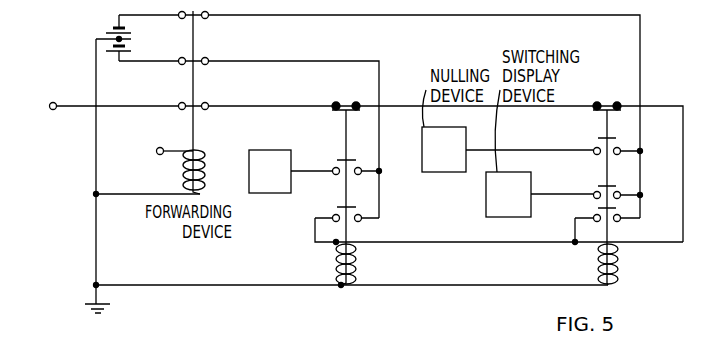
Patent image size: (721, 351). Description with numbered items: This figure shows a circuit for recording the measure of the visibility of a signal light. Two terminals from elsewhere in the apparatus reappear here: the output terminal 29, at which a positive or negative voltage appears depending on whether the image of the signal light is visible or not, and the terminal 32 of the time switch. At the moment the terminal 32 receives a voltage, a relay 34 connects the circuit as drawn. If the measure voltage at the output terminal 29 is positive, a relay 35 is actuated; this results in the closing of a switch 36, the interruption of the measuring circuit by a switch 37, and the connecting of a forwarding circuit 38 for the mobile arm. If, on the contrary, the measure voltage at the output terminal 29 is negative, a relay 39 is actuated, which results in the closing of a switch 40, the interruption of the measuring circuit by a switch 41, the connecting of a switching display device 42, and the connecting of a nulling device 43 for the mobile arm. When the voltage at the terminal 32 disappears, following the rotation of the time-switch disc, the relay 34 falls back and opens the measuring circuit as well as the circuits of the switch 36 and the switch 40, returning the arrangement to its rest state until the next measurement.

The output terminal 29 is at (54, 102).
The terminal of the time switch 32 is at (154, 152).
The relay 34 is at (206, 156).
The relay 35 is at (337, 271).
The switch 36 is at (339, 206).
The switch 37 is at (338, 113).
The forwarding circuit 38 is at (259, 195).
The relay 39 is at (598, 262).
The switch 40 is at (596, 215).
The switch 41 is at (600, 113).
The switching display device 42 is at (490, 200).
The nulling device 43 is at (438, 162).